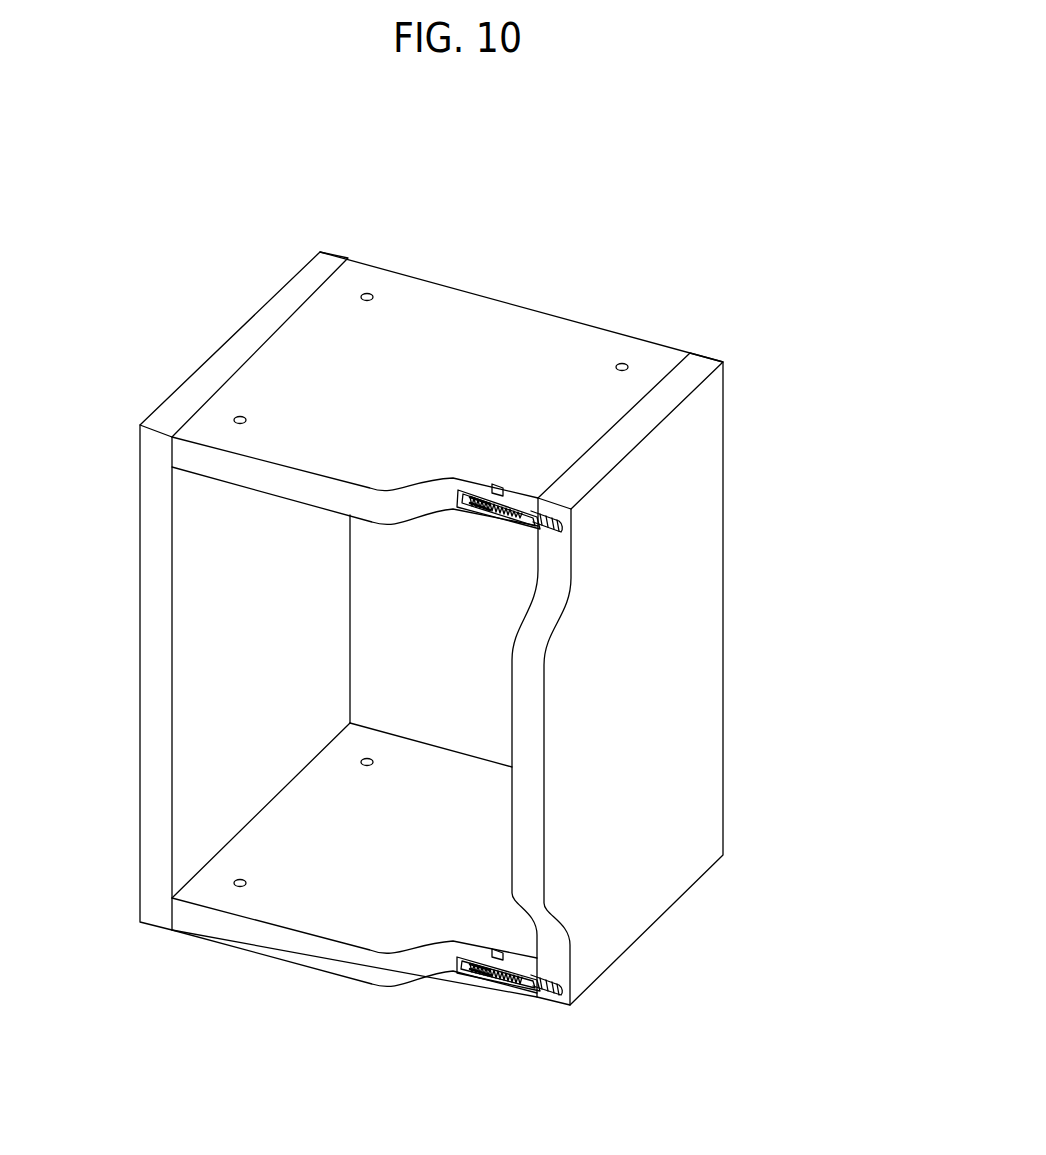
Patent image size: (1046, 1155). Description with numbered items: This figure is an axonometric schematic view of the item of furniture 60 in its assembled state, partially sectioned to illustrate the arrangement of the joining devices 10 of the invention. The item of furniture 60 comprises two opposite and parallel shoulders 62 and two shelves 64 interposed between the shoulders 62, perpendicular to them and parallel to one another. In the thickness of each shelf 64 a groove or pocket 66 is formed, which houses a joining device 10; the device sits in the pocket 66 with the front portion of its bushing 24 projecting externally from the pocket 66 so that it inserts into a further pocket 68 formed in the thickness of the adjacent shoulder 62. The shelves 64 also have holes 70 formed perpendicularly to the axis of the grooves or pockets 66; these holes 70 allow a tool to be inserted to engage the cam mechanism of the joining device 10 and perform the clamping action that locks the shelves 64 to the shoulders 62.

The joining device 10 is at (489, 540).
The bushing 24 is at (560, 522).
The item of furniture 60 is at (678, 127).
The shoulder 62 is at (197, 645).
The shelf 64 is at (470, 364).
The groove or pocket 66 is at (466, 514).
The pocket 68 is at (560, 530).
The hole 70 is at (375, 296).